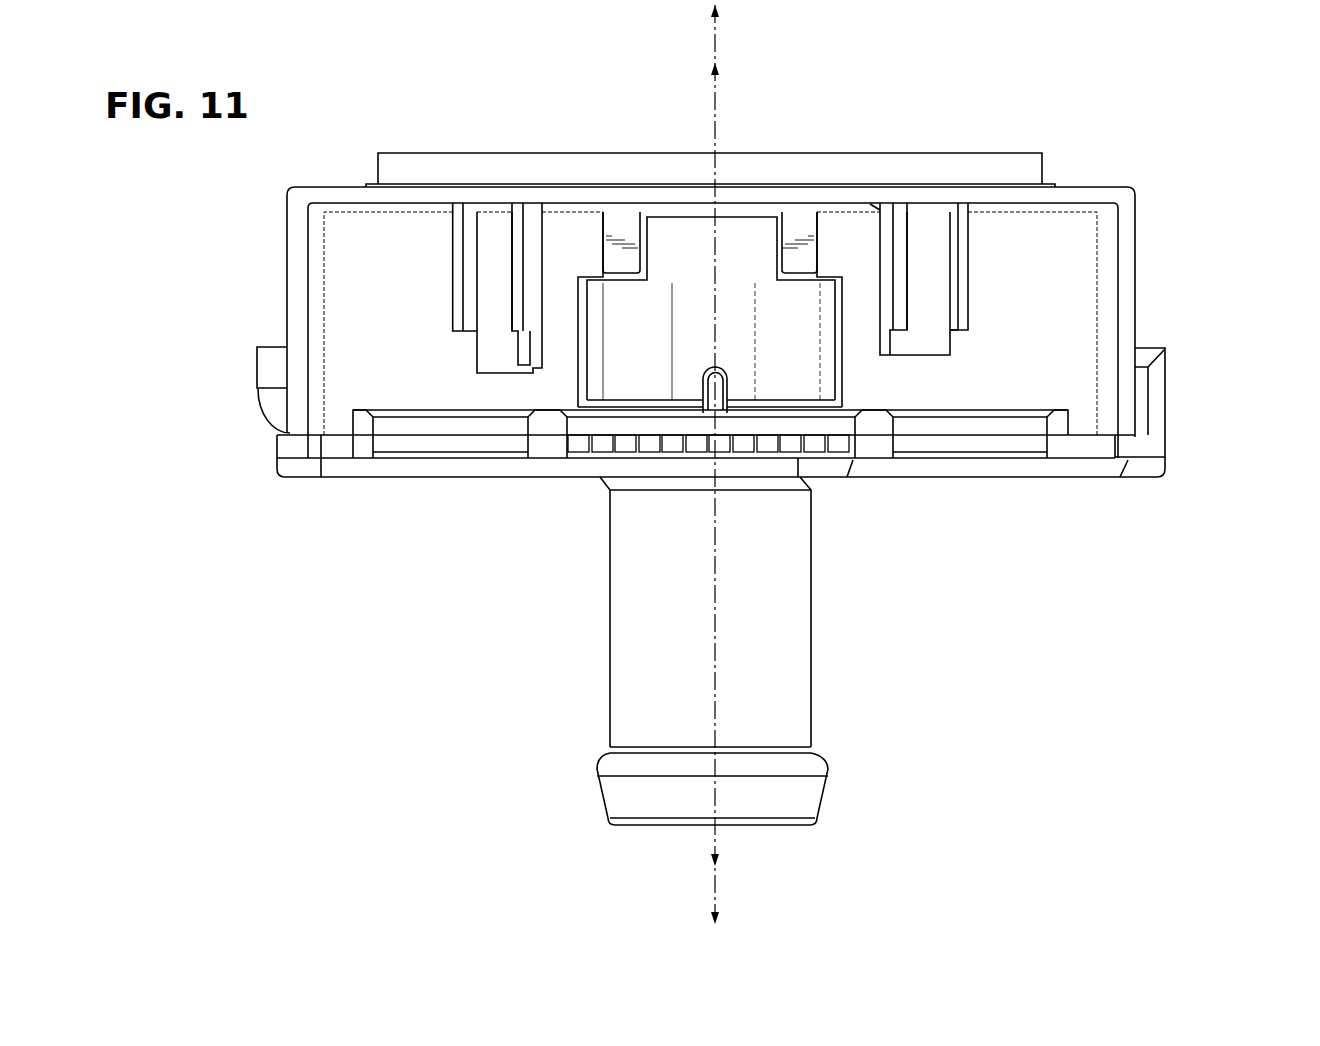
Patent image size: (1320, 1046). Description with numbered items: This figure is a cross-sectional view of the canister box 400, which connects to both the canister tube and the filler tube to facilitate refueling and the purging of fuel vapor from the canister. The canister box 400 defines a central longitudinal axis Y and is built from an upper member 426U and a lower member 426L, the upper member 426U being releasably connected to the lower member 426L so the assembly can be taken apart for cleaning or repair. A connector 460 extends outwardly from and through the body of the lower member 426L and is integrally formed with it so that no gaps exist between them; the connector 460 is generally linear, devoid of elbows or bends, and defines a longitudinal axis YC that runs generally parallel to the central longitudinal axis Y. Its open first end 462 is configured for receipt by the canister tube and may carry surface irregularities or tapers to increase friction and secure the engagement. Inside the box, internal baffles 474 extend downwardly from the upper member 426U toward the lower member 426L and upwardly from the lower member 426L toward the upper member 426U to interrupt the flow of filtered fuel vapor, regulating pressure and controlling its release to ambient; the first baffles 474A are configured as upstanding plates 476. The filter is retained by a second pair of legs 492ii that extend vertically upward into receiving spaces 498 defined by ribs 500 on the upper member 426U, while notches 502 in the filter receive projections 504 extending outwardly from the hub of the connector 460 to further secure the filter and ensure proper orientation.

The canister box 400 is at (445, 108).
The upper member 426U is at (1140, 247).
The lower member 426L is at (1170, 417).
The internal baffles 474 is at (450, 233).
The first baffles 474A is at (498, 228).
The upstanding plates 476 is at (495, 253).
The receiving spaces 498 is at (728, 203).
The second pair of legs 492ii is at (745, 240).
The ribs 500 is at (620, 225).
The notches 502 is at (716, 370).
The projections 504 is at (706, 384).
The connector 460 is at (772, 612).
The first end 462 is at (815, 800).
The central longitudinal axis Y is at (715, 35).
The longitudinal axis YC is at (715, 88).